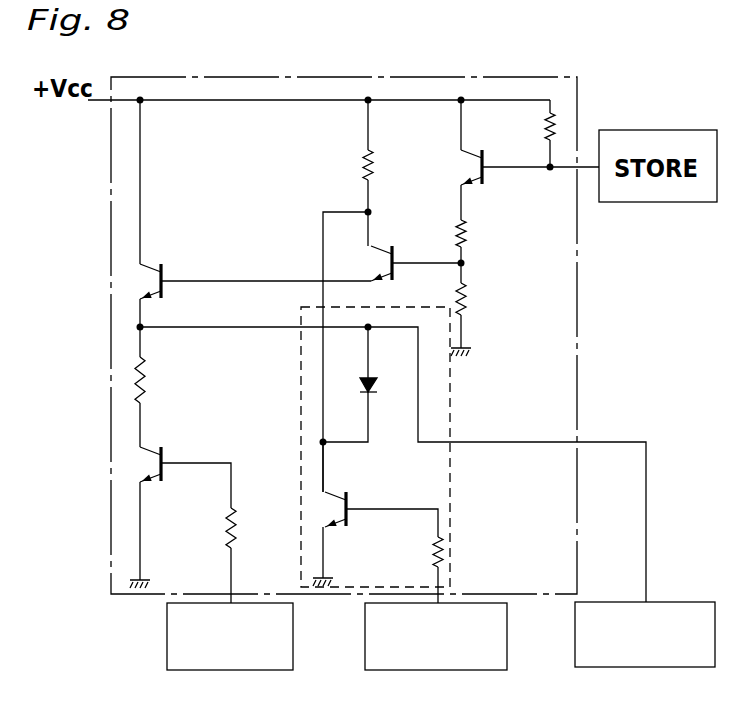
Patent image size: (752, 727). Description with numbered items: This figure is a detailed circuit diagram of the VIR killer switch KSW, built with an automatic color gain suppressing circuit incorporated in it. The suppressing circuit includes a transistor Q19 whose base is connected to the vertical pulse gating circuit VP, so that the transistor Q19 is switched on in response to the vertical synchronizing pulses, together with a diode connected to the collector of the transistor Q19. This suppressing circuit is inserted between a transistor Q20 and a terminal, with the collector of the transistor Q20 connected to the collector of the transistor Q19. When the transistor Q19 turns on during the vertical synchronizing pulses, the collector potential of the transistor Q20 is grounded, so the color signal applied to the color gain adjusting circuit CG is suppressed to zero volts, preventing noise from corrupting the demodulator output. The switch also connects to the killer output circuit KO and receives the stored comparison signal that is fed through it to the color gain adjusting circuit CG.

The transistor Q19 is at (333, 496).
The transistor Q20 is at (377, 251).
The killer output circuit KO is at (202, 670).
The vertical pulse gating circuit VP is at (404, 512).
The VIR killer switch KSW is at (540, 595).
The color gain adjusting circuit CG is at (636, 667).